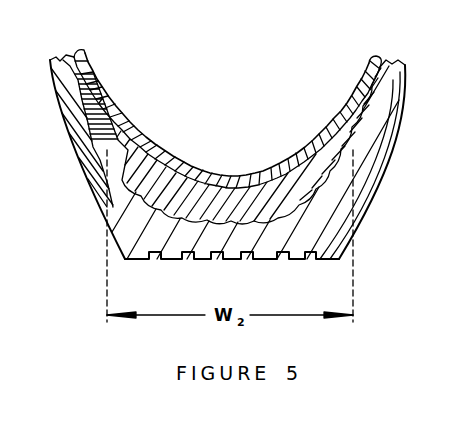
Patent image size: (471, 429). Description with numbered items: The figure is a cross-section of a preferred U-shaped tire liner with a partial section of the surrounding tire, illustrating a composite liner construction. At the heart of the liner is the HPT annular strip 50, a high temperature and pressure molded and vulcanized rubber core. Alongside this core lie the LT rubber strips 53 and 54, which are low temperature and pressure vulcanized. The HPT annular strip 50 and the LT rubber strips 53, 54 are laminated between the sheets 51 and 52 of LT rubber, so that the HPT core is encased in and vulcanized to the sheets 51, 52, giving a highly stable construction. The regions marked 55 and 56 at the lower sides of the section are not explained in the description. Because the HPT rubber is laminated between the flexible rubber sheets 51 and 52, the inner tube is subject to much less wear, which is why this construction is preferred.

The HPT annular strip 50 is at (207, 203).
The sheet of LT rubber 51 is at (145, 140).
The sheet of LT rubber 52 is at (382, 103).
The LT rubber strip 53 is at (103, 72).
The LT rubber strip 54 is at (342, 125).
The right sidewall 55 is at (334, 200).
The left sidewall 56 is at (114, 205).